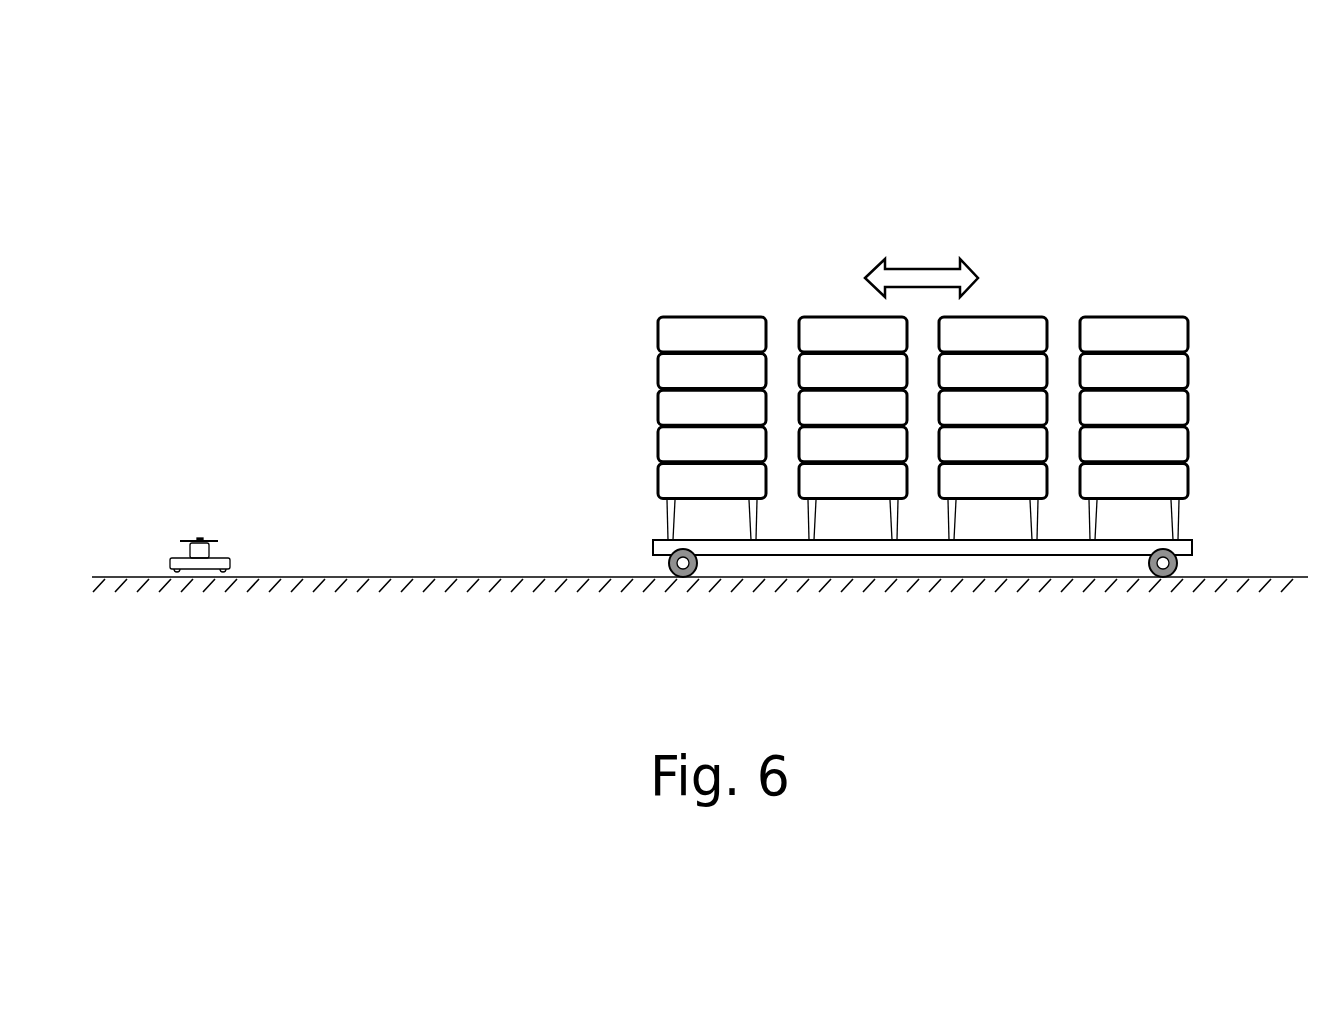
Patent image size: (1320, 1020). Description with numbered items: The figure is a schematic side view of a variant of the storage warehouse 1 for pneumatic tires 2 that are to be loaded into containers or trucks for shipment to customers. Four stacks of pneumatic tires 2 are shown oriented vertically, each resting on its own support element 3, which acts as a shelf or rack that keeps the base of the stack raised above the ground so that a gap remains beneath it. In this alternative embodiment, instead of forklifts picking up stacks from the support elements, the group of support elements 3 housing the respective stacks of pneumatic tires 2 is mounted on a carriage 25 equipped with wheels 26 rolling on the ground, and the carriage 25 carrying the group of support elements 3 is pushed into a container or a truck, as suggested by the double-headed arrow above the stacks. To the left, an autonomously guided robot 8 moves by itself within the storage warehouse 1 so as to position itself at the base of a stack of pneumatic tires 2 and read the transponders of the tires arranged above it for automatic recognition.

The storage warehouse 1 is at (1140, 134).
The pneumatic tires 2 is at (682, 373).
The support element 3 is at (658, 517).
The autonomously guided robot 8 is at (196, 527).
The carriage 25 is at (1207, 548).
The wheels 26 is at (683, 565).